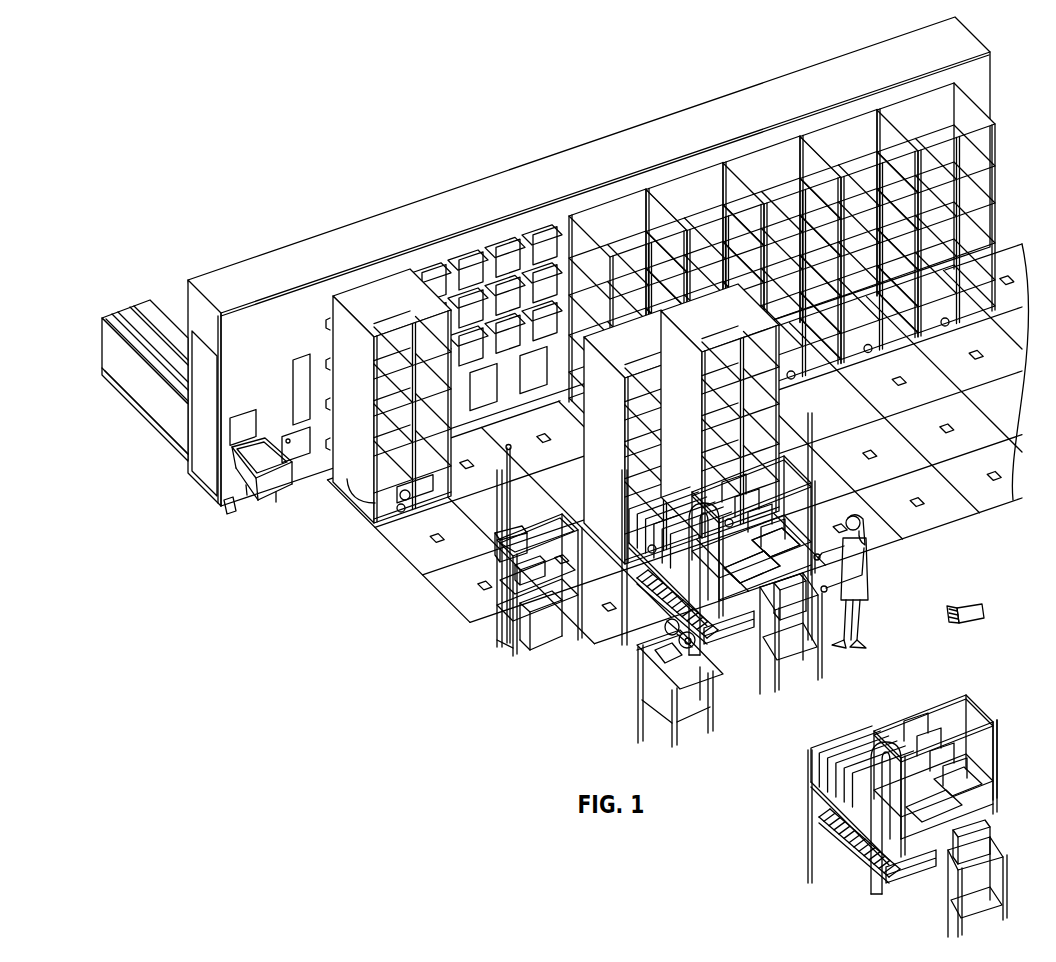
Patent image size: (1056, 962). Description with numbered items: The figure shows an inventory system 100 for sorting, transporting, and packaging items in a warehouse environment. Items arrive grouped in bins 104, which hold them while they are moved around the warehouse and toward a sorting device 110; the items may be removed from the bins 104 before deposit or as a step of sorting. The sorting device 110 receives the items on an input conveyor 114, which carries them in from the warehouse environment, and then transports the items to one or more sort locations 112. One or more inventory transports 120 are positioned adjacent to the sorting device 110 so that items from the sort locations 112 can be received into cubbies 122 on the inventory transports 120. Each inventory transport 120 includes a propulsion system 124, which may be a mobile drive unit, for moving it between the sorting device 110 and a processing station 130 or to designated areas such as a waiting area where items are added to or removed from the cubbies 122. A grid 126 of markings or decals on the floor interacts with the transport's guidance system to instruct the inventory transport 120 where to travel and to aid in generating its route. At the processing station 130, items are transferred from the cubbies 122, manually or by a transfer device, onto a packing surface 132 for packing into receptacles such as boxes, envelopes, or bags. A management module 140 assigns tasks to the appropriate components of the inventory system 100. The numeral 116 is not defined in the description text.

The inventory system 100 is at (237, 128).
The bins 104 is at (258, 497).
The sorting device 110 is at (383, 238).
The sort locations 112 is at (500, 277).
The input conveyor 114 is at (143, 305).
The conveyor belt 116 is at (160, 362).
The inventory transports 120 is at (362, 295).
The cubbies 122 is at (390, 474).
The propulsion system 124 is at (418, 498).
The grid 126 is at (443, 582).
The processing station 130 is at (640, 582).
The packing surface 132 is at (810, 517).
The management module 140 is at (975, 617).